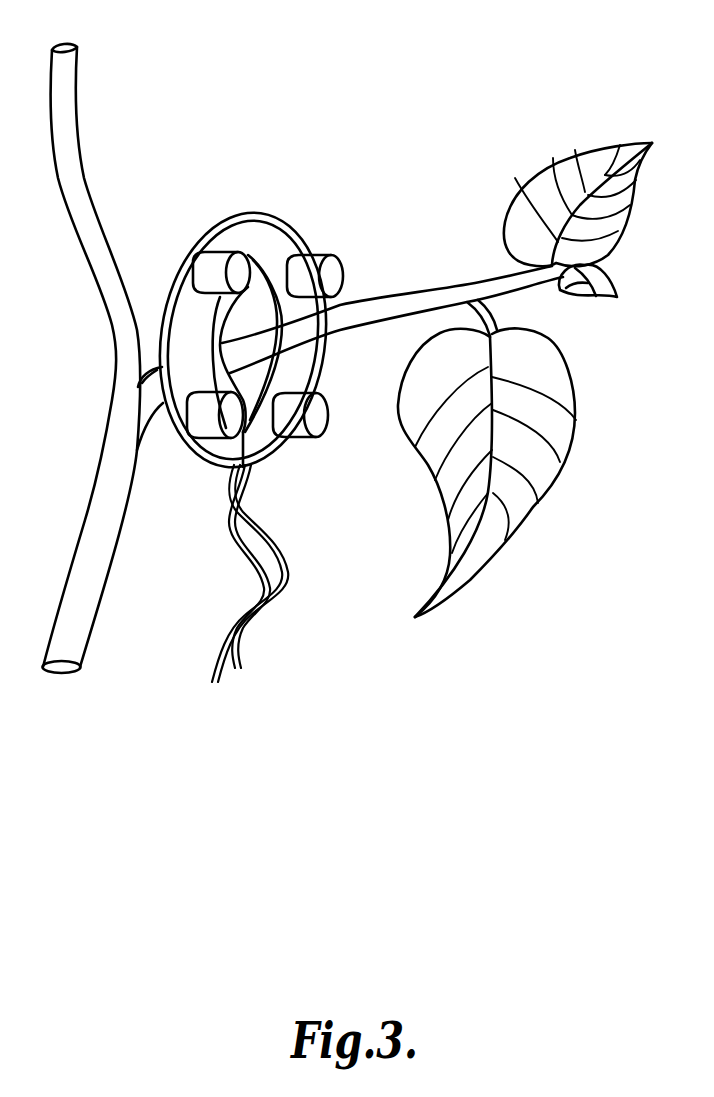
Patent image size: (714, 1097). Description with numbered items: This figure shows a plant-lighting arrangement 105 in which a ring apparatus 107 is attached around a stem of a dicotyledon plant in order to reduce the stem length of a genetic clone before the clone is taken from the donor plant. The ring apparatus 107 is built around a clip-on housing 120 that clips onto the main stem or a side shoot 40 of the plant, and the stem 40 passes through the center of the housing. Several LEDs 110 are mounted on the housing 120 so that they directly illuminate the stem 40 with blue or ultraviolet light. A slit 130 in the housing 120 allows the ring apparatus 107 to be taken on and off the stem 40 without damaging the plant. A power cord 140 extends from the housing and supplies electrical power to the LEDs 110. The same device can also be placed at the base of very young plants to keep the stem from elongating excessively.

The plant support assembly 105 is at (458, 131).
The ring apparatus 107 is at (260, 192).
The LEDs 110 is at (312, 262).
The clip-on housing 120 is at (247, 232).
The slit 130 is at (243, 437).
The power cord 140 is at (257, 602).
The side shoot 40 is at (402, 303).